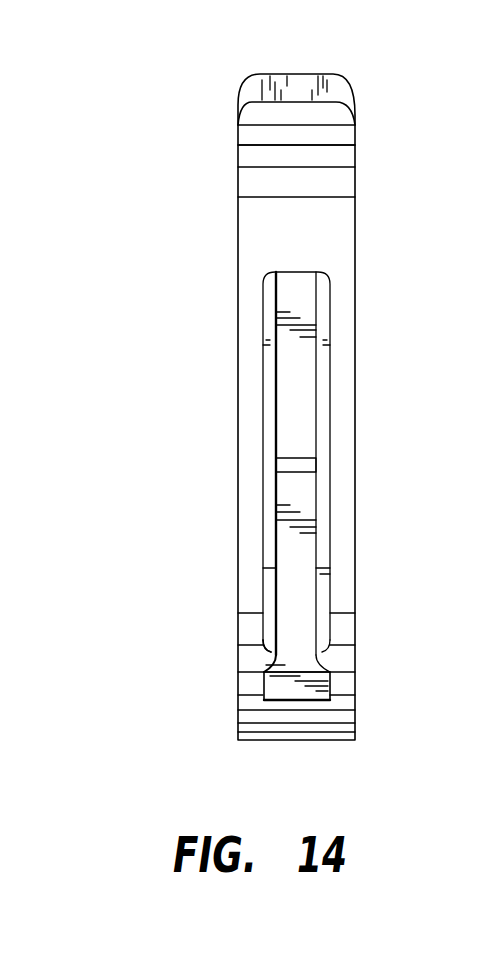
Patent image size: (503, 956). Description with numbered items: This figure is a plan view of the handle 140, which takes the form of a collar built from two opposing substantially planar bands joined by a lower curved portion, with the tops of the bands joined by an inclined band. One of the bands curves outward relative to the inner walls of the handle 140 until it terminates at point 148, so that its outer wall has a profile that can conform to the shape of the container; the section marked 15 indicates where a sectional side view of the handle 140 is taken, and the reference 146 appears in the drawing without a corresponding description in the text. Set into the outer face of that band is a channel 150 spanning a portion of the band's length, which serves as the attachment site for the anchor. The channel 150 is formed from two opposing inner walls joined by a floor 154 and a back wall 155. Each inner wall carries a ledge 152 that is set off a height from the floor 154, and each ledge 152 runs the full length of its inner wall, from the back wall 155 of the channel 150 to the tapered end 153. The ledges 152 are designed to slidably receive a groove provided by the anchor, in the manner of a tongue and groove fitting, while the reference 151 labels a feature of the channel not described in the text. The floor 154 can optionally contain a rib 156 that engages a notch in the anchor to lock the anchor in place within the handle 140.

The handle 140 is at (353, 80).
The point 148 is at (248, 102).
The cap rings 146 is at (255, 164).
The back wall 155 is at (286, 274).
The floor 154 is at (296, 400).
The rib 156 is at (300, 460).
The ledge 152 is at (316, 508).
The lower channel wall 151 is at (297, 584).
The tapered end 153 is at (270, 645).
The channel 150 is at (298, 630).
The section line 15- 15 is at (294, 197).